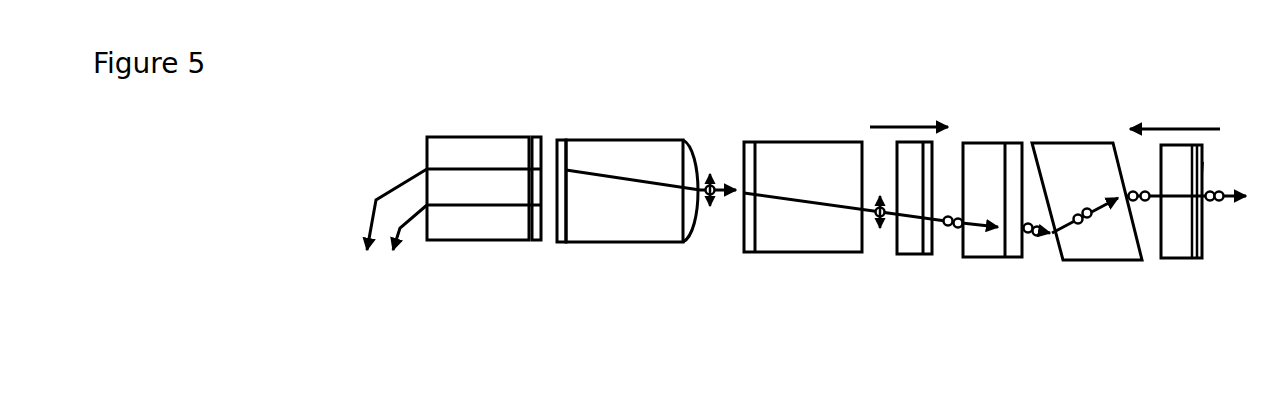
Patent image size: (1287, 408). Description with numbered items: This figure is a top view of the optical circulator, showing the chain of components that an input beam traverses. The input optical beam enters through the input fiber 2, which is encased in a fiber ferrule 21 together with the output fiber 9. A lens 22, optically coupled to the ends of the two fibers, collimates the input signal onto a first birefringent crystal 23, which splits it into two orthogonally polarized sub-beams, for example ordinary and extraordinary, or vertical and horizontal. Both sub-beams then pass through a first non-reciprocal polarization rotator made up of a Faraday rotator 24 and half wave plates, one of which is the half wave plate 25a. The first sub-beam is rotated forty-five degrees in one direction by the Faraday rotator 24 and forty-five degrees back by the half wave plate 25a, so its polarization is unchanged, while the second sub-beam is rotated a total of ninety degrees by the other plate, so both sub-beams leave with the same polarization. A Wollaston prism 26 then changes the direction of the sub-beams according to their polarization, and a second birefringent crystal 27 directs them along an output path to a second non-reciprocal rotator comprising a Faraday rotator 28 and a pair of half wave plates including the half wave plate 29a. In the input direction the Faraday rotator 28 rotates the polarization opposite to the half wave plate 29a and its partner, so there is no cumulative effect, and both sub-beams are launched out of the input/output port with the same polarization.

The input fiber 2 is at (398, 184).
The output fiber 9 is at (400, 240).
The fiber ferrule 21 is at (480, 150).
The lens 22 is at (638, 230).
The first birefringent crystal 23 is at (822, 153).
The Faraday rotator 24 is at (895, 257).
The half wave plate 25a is at (928, 258).
The Wollaston prism 26 is at (997, 150).
The second birefringent crystal 27 is at (1115, 250).
The Faraday rotator 28 is at (1177, 253).
The half wave plate 29a is at (1203, 162).